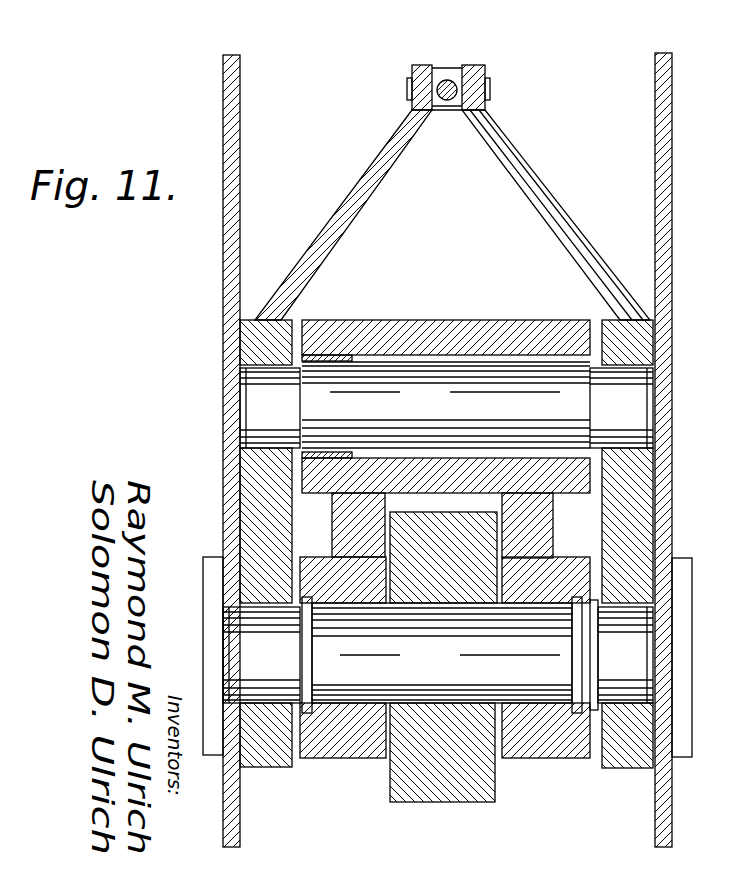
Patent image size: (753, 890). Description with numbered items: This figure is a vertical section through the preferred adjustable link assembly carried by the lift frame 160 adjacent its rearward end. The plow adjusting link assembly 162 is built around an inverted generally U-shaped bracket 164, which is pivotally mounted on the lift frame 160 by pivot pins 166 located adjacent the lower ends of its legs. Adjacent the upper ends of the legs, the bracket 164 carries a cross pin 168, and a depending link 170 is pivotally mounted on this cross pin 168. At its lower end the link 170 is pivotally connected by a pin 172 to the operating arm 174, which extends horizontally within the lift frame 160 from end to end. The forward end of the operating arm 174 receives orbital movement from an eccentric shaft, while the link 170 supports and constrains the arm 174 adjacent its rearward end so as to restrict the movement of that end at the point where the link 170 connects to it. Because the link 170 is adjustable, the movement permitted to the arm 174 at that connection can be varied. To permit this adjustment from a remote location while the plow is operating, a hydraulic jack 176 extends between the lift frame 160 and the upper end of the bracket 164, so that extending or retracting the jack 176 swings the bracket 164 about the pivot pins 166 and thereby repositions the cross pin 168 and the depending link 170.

The lift frame 160 is at (665, 236).
The plow adjusting link assembly 162 is at (452, 171).
The inverted generally U-shaped bracket 164 is at (348, 208).
The pivot pins 166 is at (262, 680).
The cross pin 168 is at (405, 388).
The depending link 170 is at (535, 552).
The pin 172 is at (362, 685).
The operating arm 174 is at (440, 790).
The hydraulic jack 176 is at (450, 76).